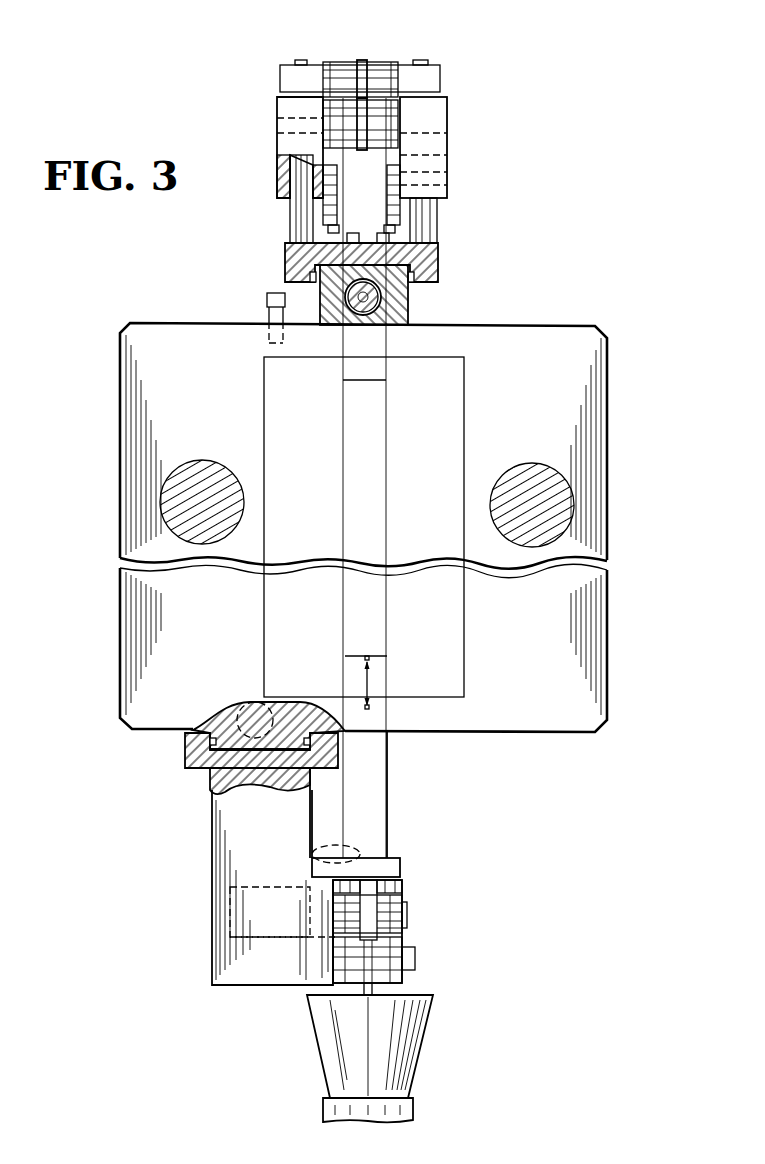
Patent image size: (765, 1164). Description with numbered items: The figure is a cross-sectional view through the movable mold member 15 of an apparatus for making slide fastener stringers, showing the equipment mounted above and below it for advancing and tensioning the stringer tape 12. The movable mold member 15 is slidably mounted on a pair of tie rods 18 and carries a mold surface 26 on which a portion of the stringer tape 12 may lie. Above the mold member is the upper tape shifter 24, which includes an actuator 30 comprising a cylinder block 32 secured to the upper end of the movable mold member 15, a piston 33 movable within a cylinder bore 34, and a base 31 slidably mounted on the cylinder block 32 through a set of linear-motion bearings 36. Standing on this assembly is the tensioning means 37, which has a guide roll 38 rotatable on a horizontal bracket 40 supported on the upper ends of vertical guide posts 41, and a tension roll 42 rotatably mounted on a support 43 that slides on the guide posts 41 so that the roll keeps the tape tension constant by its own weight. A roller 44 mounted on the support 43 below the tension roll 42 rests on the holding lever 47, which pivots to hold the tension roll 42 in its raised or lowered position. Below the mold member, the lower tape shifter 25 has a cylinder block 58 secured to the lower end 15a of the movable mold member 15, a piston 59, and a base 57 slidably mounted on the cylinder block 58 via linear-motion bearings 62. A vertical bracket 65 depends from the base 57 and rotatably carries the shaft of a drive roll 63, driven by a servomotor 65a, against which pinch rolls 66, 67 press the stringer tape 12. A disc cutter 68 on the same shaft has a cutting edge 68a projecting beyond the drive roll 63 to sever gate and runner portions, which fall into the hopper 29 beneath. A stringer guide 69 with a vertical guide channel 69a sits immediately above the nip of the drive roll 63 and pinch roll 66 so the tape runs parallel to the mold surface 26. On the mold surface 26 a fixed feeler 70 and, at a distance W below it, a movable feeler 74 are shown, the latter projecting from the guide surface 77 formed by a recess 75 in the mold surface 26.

The stringer tape 12 is at (382, 157).
The movable mold member 15 is at (588, 380).
The lower end of the movable mold member 15a is at (372, 735).
The tie rods 18 is at (205, 485).
The upper tape shifter 24 is at (507, 210).
The lower tape shifter 25 is at (407, 878).
The mold surface 26 is at (368, 490).
The hopper 29 is at (398, 1050).
The actuator 30 is at (308, 296).
The base 31 is at (425, 258).
The cylinder block 32 is at (395, 300).
The piston 33 is at (380, 312).
The cylinder bore 34 is at (345, 312).
The linear-motion bearings 36 is at (312, 272).
The tensioning means 37 is at (272, 110).
The guide roll 38 is at (373, 75).
The horizontal bracket 40 is at (288, 74).
The vertical guide posts 41 is at (297, 212).
The tension roll 42 is at (392, 118).
The support 43 is at (290, 145).
The roller 44 is at (387, 175).
The holding lever 47 is at (387, 214).
The base 57 is at (200, 760).
The cylinder block 58 is at (277, 743).
The piston 59 is at (255, 712).
The linear-motion bearings 62 is at (208, 740).
The drive roll 63 is at (382, 888).
The vertical bracket 65 is at (225, 905).
The servomotor 65a is at (247, 935).
The pinch roll 66 is at (388, 910).
The pinch roll 67 is at (395, 978).
The disc cutter 68 is at (340, 893).
The cutting edge 68a is at (343, 963).
The stringer guide 69 is at (395, 860).
The vertical guide channel 69a is at (315, 858).
The feeler 70 is at (372, 660).
The feeler 74 is at (372, 708).
The recess 75 is at (345, 665).
The guide surface 77 is at (357, 715).
The distance W is at (372, 683).